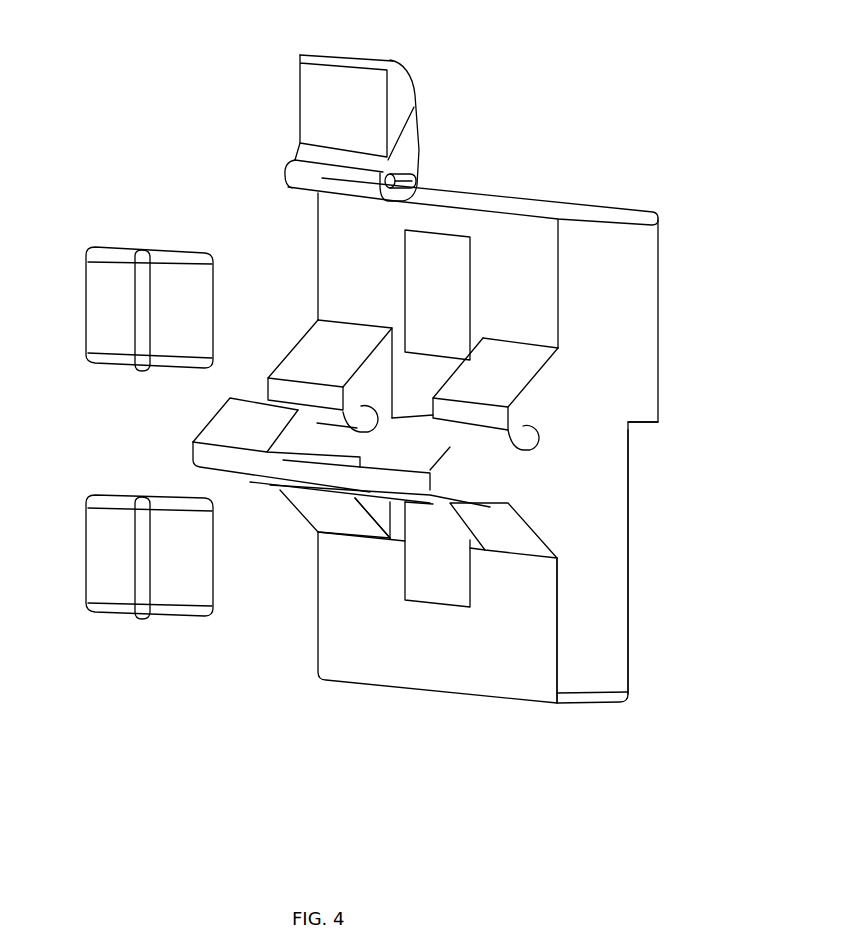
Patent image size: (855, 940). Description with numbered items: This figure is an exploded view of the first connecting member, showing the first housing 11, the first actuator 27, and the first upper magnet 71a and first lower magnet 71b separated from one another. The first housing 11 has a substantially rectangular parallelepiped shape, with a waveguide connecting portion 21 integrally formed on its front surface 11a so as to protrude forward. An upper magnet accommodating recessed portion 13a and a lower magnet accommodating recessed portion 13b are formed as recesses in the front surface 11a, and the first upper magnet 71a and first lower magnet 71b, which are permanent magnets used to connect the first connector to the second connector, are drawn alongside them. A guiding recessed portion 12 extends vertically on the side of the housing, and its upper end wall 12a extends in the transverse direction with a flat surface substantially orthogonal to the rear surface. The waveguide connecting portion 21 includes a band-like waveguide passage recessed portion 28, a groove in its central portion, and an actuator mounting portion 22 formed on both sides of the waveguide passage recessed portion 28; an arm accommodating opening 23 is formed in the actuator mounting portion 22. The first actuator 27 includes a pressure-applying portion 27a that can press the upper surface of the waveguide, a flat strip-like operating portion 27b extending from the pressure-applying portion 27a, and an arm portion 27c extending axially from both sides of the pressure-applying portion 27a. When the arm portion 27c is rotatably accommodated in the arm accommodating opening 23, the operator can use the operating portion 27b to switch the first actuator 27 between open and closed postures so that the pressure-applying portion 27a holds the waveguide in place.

The first housing 11 is at (601, 207).
The front surface 11a is at (538, 690).
The guiding recessed portion 12 is at (632, 579).
The upper end wall 12a is at (647, 423).
The upper magnet accommodating recessed portion 13a is at (443, 247).
The lower magnet accommodating recessed portion 13b is at (423, 587).
The waveguide connecting portion 21 is at (508, 535).
The actuator mounting portion 22 is at (222, 420).
The arm accommodating opening 23 is at (533, 438).
The first actuator 27 is at (347, 57).
The pressure-applying portion 27a is at (313, 173).
The operating portion 27b is at (400, 100).
The arm portion 27c is at (405, 178).
The waveguide passage recessed portion 28 is at (333, 458).
The first upper magnet 71a is at (128, 246).
The first lower magnet 71b is at (110, 597).